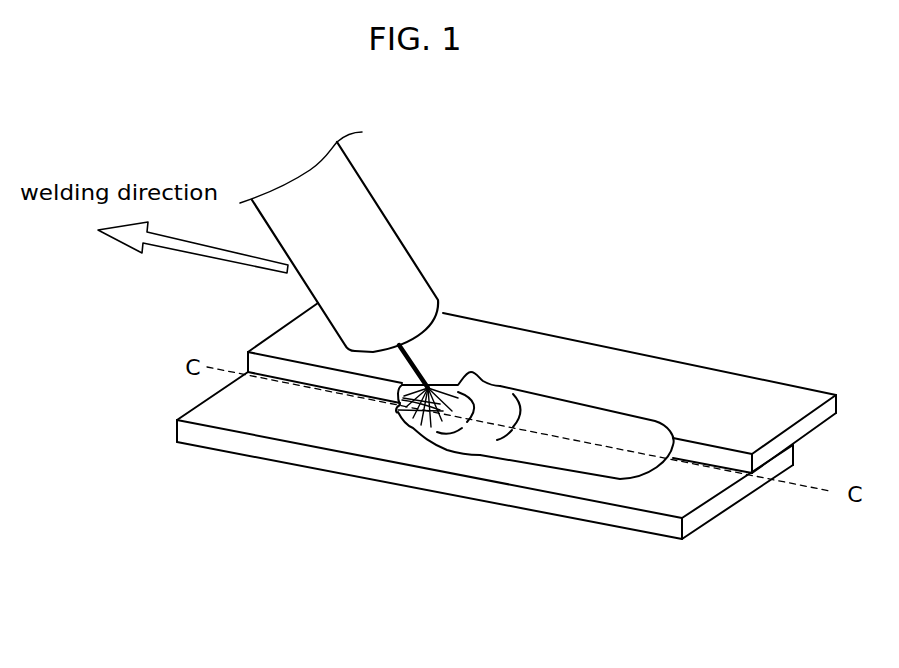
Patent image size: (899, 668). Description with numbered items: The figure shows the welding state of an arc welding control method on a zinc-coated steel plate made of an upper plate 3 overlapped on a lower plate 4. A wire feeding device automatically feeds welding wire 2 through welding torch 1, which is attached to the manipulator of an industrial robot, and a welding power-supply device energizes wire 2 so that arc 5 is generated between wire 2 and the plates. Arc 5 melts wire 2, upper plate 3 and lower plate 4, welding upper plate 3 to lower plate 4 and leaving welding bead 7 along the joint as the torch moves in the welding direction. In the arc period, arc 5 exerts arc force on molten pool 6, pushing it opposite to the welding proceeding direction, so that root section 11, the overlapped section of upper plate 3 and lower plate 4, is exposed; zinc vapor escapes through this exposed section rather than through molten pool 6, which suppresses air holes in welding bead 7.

The welding torch 1 is at (350, 207).
The welding wire 2 is at (423, 363).
The upper plate 3 is at (300, 323).
The lower plate 4 is at (215, 413).
The arc 5 is at (397, 423).
The molten pool 6 is at (493, 427).
The welding bead 7 is at (583, 437).
The root section 11 is at (397, 417).